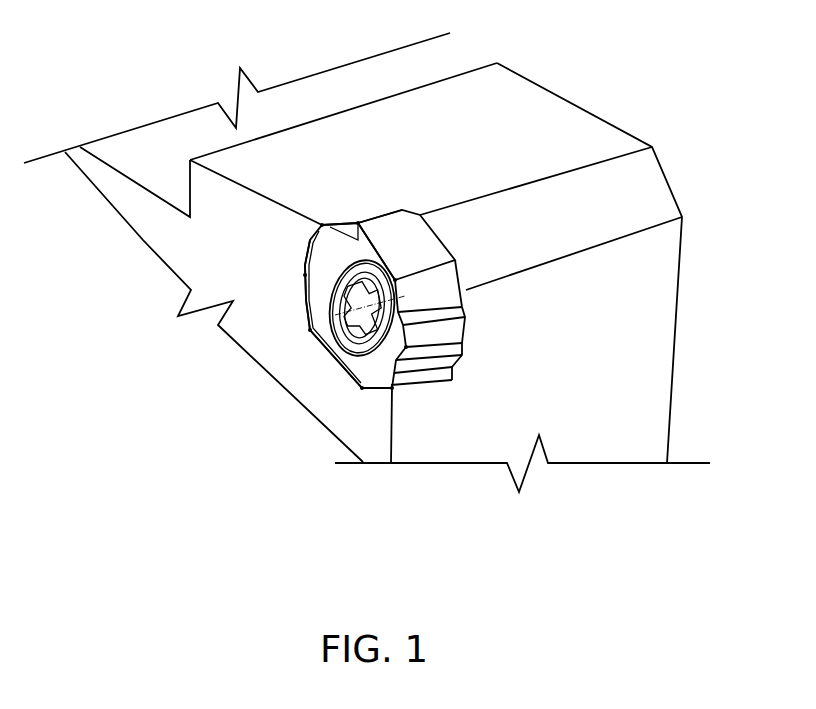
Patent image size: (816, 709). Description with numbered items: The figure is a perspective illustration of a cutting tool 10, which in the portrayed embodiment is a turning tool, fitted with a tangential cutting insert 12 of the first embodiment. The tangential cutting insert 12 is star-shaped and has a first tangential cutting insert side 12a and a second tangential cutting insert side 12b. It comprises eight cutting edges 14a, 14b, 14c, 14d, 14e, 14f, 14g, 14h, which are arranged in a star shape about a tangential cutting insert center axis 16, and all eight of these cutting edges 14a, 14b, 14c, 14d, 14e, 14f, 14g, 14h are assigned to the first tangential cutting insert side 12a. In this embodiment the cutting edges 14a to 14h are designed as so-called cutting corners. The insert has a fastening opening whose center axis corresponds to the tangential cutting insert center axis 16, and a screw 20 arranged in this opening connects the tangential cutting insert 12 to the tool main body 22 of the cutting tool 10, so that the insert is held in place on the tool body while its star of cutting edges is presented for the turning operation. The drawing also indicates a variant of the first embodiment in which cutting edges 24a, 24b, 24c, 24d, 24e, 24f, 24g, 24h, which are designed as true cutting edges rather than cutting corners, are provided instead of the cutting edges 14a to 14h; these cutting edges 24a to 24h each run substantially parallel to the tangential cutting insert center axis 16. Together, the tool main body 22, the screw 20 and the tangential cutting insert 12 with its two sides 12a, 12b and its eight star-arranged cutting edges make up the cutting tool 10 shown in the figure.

The cutting tool 10 is at (608, 57).
The tangential cutting insert 12 is at (335, 463).
The first tangential cutting insert side 12a is at (337, 362).
The second tangential cutting insert side 12b is at (441, 258).
The cutting edge 14a is at (310, 228).
The cutting edge 14b is at (303, 275).
The cutting edge 14c is at (318, 338).
The cutting edge 14d is at (363, 400).
The cutting edge 14e is at (404, 402).
The cutting edge 14f is at (410, 348).
The cutting edge 14g is at (399, 283).
The cutting edge 14h is at (360, 224).
The tangential cutting insert center axis 16 is at (346, 355).
The screw 20 is at (334, 283).
The tool main body 22 is at (592, 135).
The cutting edge 24a is at (347, 207).
The cutting edge 24b is at (303, 275).
The cutting edge 24c is at (318, 338).
The cutting edge 24d is at (363, 400).
The cutting edge 24e is at (443, 382).
The cutting edge 24f is at (453, 338).
The cutting edge 24g is at (441, 236).
The cutting edge 24h is at (403, 214).